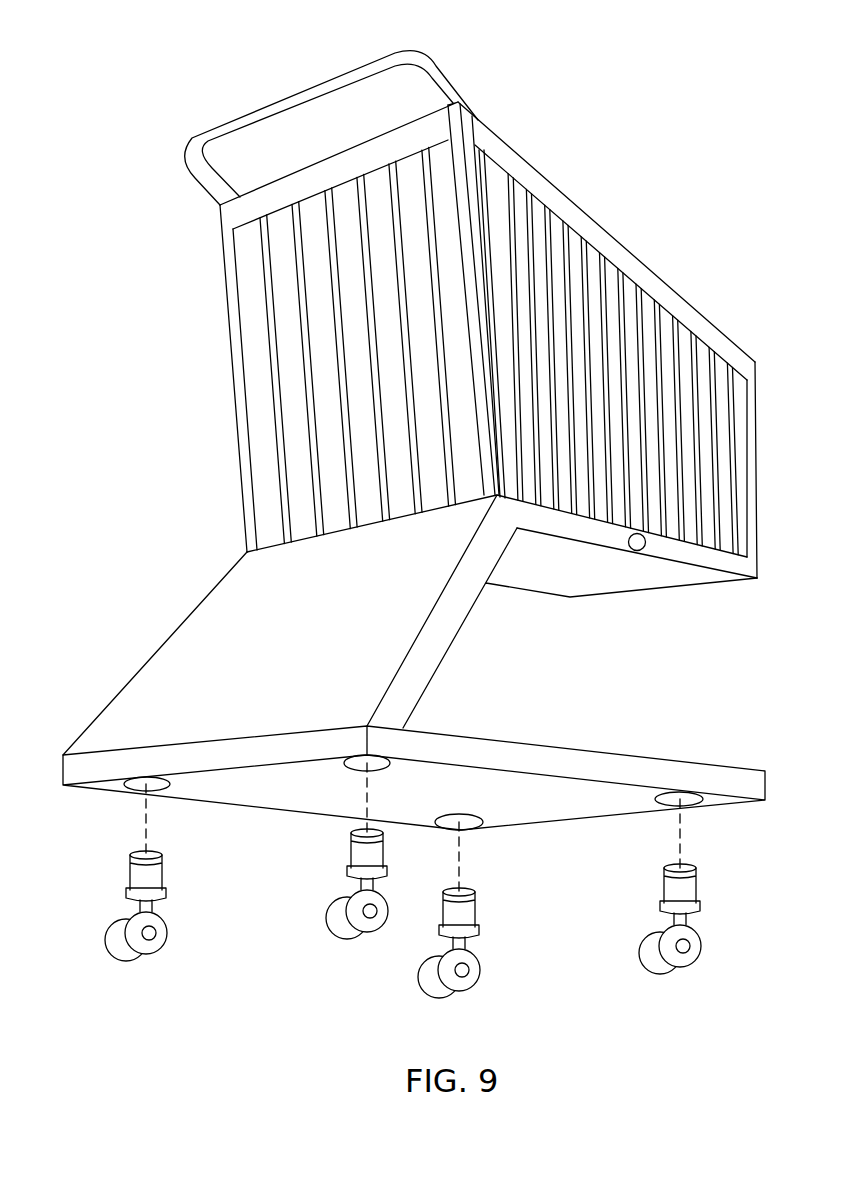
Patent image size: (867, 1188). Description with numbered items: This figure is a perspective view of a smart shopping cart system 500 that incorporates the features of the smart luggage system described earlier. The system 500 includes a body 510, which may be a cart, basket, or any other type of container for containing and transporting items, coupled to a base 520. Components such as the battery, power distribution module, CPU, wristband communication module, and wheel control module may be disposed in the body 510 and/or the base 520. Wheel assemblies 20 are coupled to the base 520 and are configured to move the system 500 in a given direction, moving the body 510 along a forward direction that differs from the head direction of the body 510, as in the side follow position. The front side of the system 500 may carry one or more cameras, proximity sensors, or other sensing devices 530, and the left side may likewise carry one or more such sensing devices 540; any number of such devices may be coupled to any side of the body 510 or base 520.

The smart shopping cart system 500 is at (680, 62).
The body 510 is at (703, 315).
The base 520 is at (730, 778).
The sensing device 530 is at (757, 570).
The sensing device 540 is at (643, 548).
The wheel assembly 20 is at (152, 963).